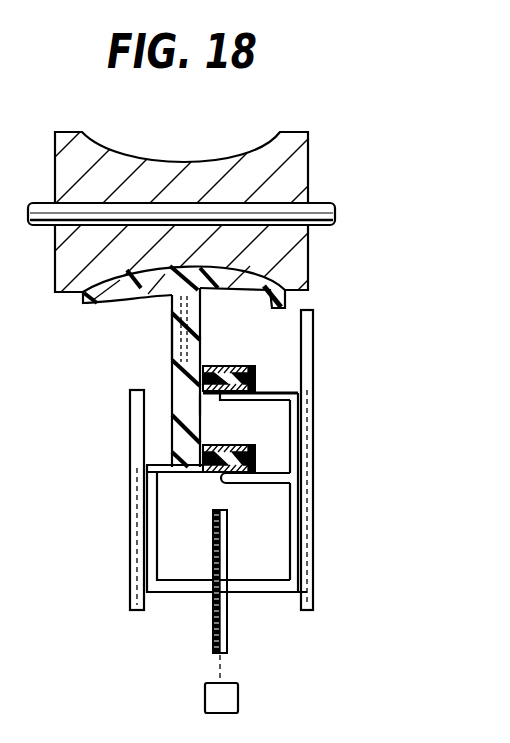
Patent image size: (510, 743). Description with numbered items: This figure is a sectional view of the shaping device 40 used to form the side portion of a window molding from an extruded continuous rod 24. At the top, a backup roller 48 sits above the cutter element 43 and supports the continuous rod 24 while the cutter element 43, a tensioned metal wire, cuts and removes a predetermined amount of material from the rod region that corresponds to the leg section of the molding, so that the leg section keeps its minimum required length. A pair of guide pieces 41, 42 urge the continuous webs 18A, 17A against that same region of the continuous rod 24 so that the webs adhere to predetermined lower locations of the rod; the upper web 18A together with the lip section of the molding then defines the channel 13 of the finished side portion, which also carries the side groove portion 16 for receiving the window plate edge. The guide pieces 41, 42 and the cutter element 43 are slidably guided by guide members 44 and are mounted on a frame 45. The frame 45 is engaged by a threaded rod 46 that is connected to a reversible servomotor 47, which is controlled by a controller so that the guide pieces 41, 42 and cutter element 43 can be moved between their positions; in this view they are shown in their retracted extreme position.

The channel 13 is at (240, 318).
The side groove portion 16 is at (250, 412).
The lower continuous web 17A is at (258, 450).
The upper continuous web 18A is at (245, 366).
The continuous rod 24 is at (170, 333).
The shaping device 40 is at (324, 387).
The guide piece 41 is at (196, 404).
The guide piece 42 is at (232, 484).
The cutter element 43 is at (170, 470).
The guide members 44 is at (130, 543).
The frame 45 is at (178, 592).
The threaded rod 46 is at (227, 622).
The reversible servomotor 47 is at (238, 697).
The backup roller 48 is at (192, 163).